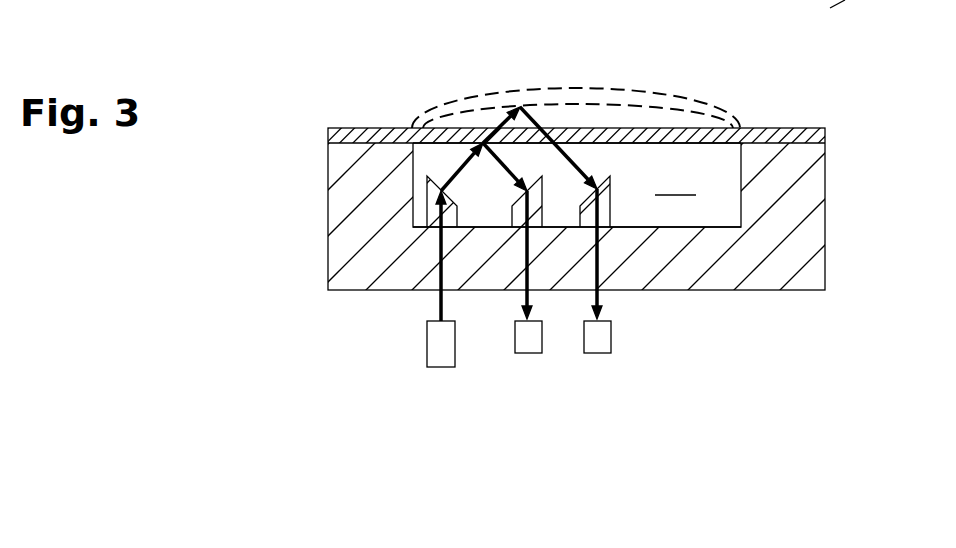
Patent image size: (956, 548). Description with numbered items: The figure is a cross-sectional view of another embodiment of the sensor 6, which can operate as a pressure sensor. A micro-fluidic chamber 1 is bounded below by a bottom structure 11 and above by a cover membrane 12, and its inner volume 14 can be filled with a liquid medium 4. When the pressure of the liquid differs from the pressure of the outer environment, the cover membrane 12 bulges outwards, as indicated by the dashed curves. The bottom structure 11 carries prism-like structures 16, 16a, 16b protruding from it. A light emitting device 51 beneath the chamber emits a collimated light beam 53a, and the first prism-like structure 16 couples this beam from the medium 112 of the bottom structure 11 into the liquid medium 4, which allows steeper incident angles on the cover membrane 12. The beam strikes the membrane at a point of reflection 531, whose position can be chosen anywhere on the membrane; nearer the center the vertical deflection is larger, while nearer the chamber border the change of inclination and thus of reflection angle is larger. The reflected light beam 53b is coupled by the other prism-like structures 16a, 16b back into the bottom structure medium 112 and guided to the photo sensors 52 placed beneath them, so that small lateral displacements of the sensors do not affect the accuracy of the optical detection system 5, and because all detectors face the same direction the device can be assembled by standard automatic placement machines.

The micro-fluidic chamber 1 is at (837, 133).
The liquid medium 4 is at (546, 191).
The optical detection system 5 is at (637, 230).
The sensor 6 is at (550, 164).
The bottom structure 11 is at (564, 265).
The medium of the bottom structure 112 is at (564, 265).
The cover membrane 12 is at (573, 83).
The inner volume 14 is at (546, 191).
The first prism-like structure 16 is at (412, 147).
The prism-like structure 16a is at (551, 143).
The prism-like structure 16b is at (577, 283).
The light emitting device 51 is at (420, 391).
The photo sensor 52 is at (630, 0).
The light beam 53a is at (455, 232).
The reflected light beam 53b is at (511, 231).
The point of reflection 531 is at (558, 82).